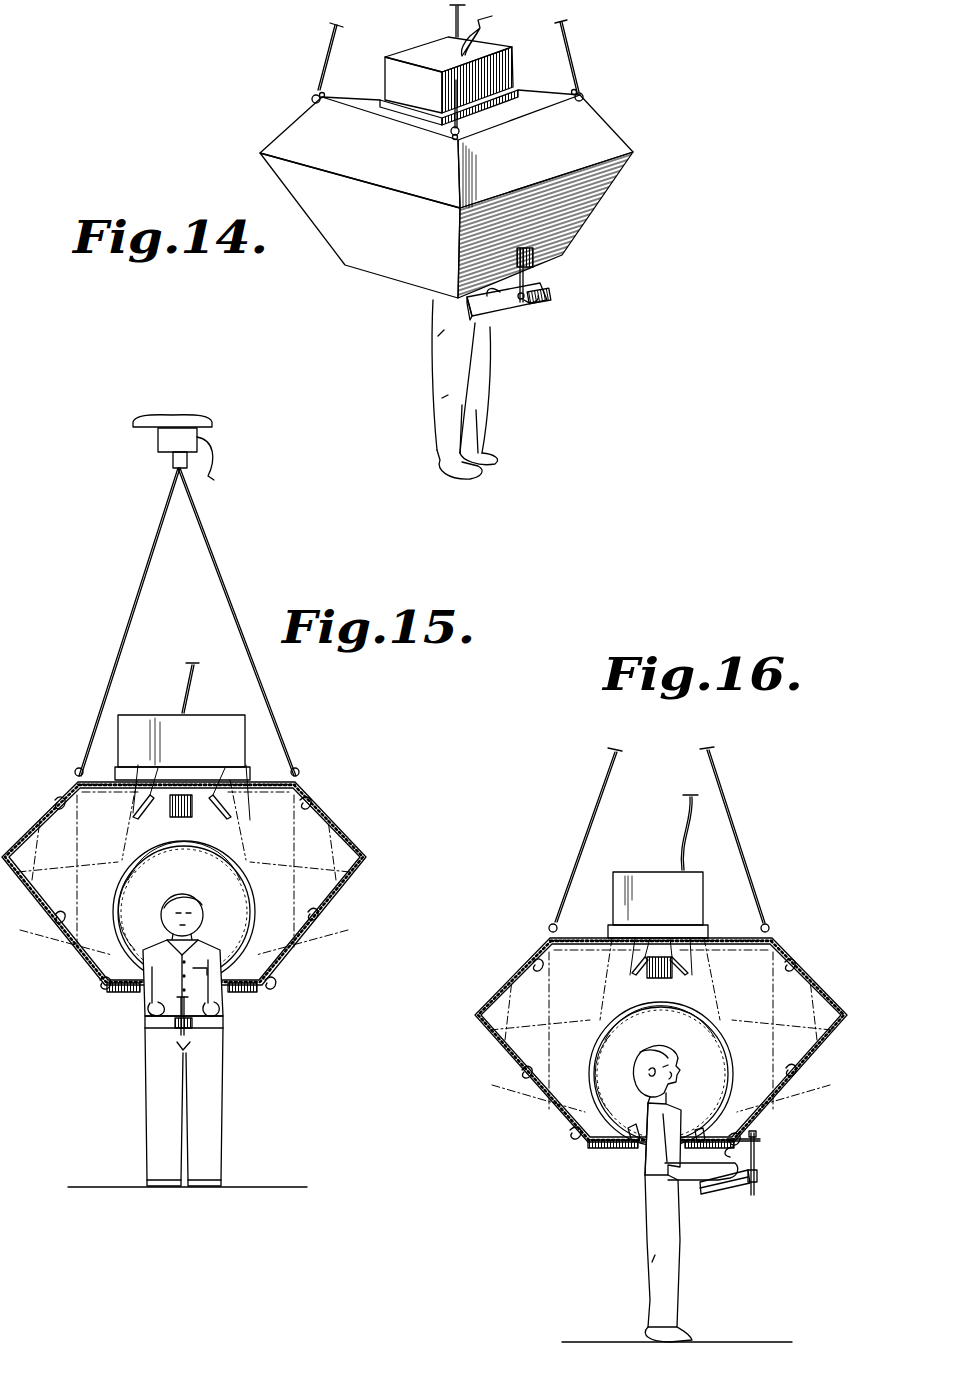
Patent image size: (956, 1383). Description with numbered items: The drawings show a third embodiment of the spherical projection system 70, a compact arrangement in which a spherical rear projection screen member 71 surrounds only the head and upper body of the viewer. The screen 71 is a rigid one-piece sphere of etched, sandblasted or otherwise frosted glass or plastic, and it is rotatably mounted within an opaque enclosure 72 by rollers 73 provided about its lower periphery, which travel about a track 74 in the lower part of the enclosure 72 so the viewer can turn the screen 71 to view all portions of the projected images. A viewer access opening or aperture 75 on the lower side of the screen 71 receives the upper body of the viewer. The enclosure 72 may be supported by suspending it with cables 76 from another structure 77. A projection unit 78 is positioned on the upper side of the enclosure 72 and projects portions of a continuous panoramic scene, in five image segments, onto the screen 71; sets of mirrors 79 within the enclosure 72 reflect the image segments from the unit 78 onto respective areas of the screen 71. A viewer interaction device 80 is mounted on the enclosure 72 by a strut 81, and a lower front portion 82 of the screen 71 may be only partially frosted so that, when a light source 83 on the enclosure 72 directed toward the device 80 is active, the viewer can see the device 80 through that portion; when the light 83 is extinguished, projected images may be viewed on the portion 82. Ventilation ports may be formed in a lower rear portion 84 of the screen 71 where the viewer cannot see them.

In FIG. 14, the third embodiment of the spherical projection system 70 is at (623, 113).
In FIG. 15, the third embodiment of the spherical projection system 70 is at (370, 797).
In FIG. 16, the third embodiment of the spherical projection system 70 is at (528, 915).
In FIG. 15, the spherical rear projection screen member 71 is at (117, 888).
In FIG. 16, the spherical rear projection screen member 71 is at (597, 1040).
In FIG. 14, the opaque enclosure 72 is at (583, 195).
In FIG. 15, the opaque enclosure 72 is at (357, 842).
In FIG. 16, the opaque enclosure 72 is at (490, 990).
In FIG. 15, the rollers 73 is at (102, 978).
In FIG. 16, the rollers 73 is at (572, 1132).
In FIG. 15, the track 74 is at (107, 990).
In FIG. 16, the track 74 is at (577, 1138).
In FIG. 15, the viewer access opening or aperture 75 is at (227, 1005).
In FIG. 16, the viewer access opening or aperture 75 is at (640, 1150).
In FIG. 14, the cables 76 is at (325, 60).
In FIG. 15, the cables 76 is at (197, 492).
In FIG. 16, the cables 76 is at (598, 782).
In FIG. 15, the another structure 77 is at (153, 418).
In FIG. 14, the projection unit 78 is at (422, 87).
In FIG. 15, the projection unit 78 is at (163, 713).
In FIG. 16, the projection unit 78 is at (652, 870).
In FIG. 15, the sets of mirrors 79 is at (57, 800).
In FIG. 16, the sets of mirrors 79 is at (535, 962).
In FIG. 14, the viewer interaction device 80 is at (538, 300).
In FIG. 15, the viewer interaction device 80 is at (150, 1027).
In FIG. 16, the viewer interaction device 80 is at (730, 1185).
In FIG. 14, the strut 81 is at (528, 277).
In FIG. 15, the strut 81 is at (222, 1030).
In FIG. 16, the strut 81 is at (755, 1165).
In FIG. 16, the lower front portion of the screen 82 is at (710, 1122).
In FIG. 16, the light source 83 is at (730, 1155).
In FIG. 16, the lower rear portion of the screen 84 is at (633, 1135).